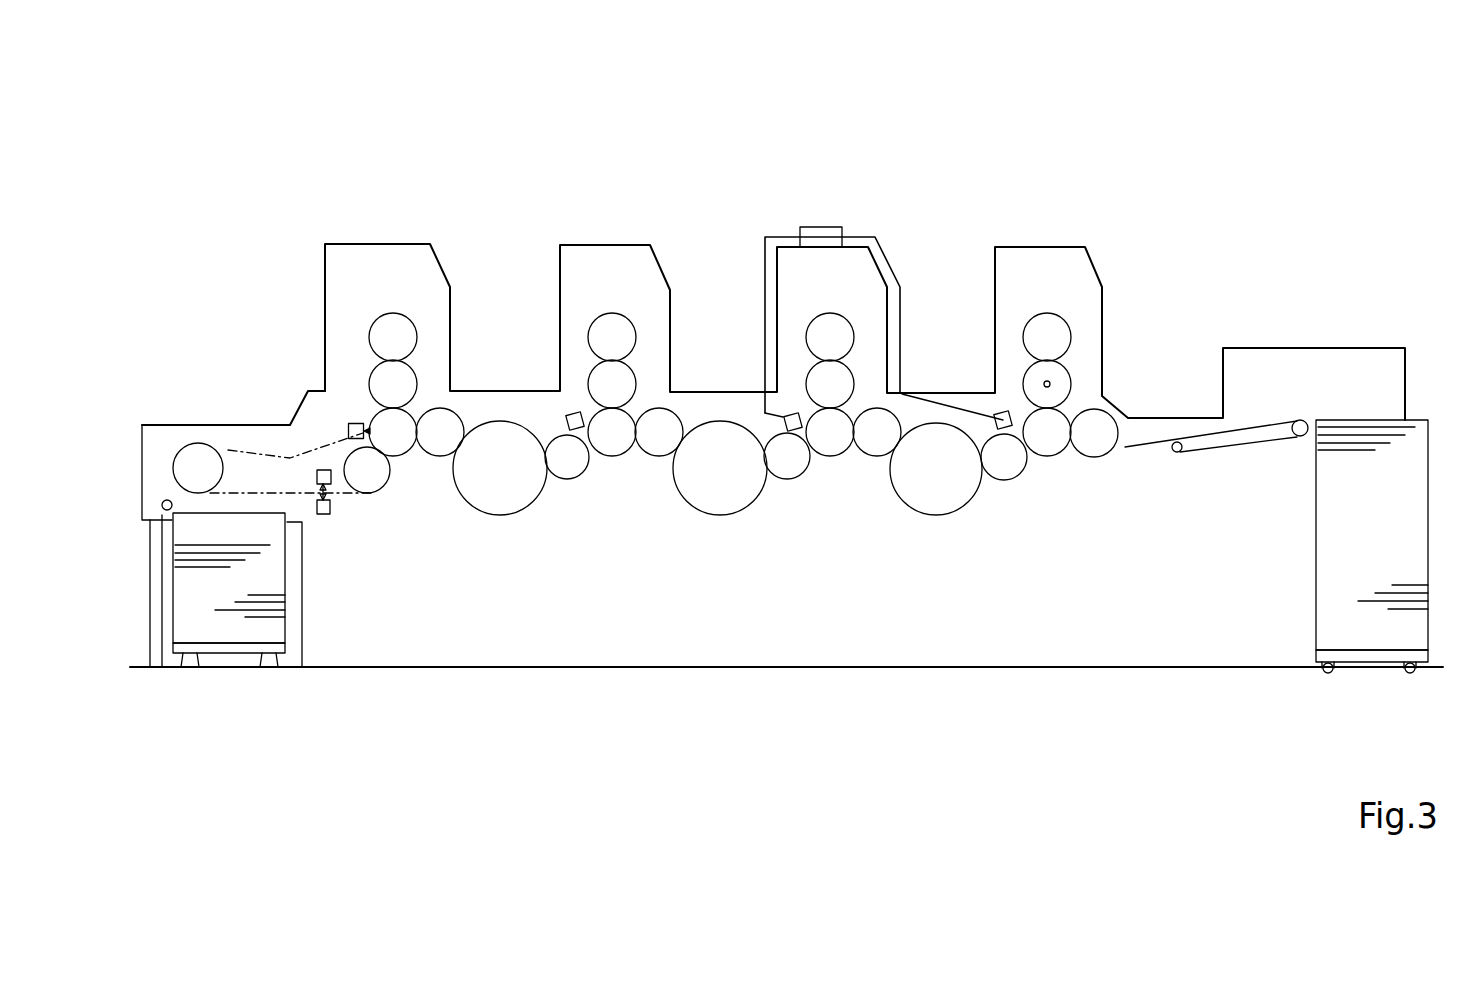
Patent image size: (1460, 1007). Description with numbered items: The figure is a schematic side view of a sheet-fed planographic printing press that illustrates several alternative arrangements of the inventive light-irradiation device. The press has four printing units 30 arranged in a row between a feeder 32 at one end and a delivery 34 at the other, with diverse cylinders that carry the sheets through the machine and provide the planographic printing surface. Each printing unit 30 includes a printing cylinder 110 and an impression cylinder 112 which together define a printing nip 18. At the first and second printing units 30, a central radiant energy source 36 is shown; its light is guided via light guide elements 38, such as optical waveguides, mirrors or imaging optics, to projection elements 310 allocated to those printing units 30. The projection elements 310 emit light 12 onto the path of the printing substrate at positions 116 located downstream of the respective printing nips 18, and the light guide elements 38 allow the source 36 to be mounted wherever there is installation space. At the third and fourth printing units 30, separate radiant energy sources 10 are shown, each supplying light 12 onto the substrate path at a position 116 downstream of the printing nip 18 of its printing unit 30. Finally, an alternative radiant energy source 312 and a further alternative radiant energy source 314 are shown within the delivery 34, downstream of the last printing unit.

The radiant energy source 10 is at (347, 429).
The light 12 is at (369, 436).
The printing nip 18 is at (393, 403).
The printing unit 30 is at (360, 244).
The feeder 32 is at (1297, 348).
The delivery 34 is at (152, 425).
The central radiant energy source 36 is at (820, 236).
The light guide element 38 is at (764, 262).
The printing cylinder 110 is at (1050, 377).
The impression cylinder 112 is at (410, 436).
The position 116 is at (318, 480).
The projection element 310 is at (782, 421).
The alternative radiant energy source 312 is at (323, 516).
The further alternative radiant energy source 314 is at (318, 472).